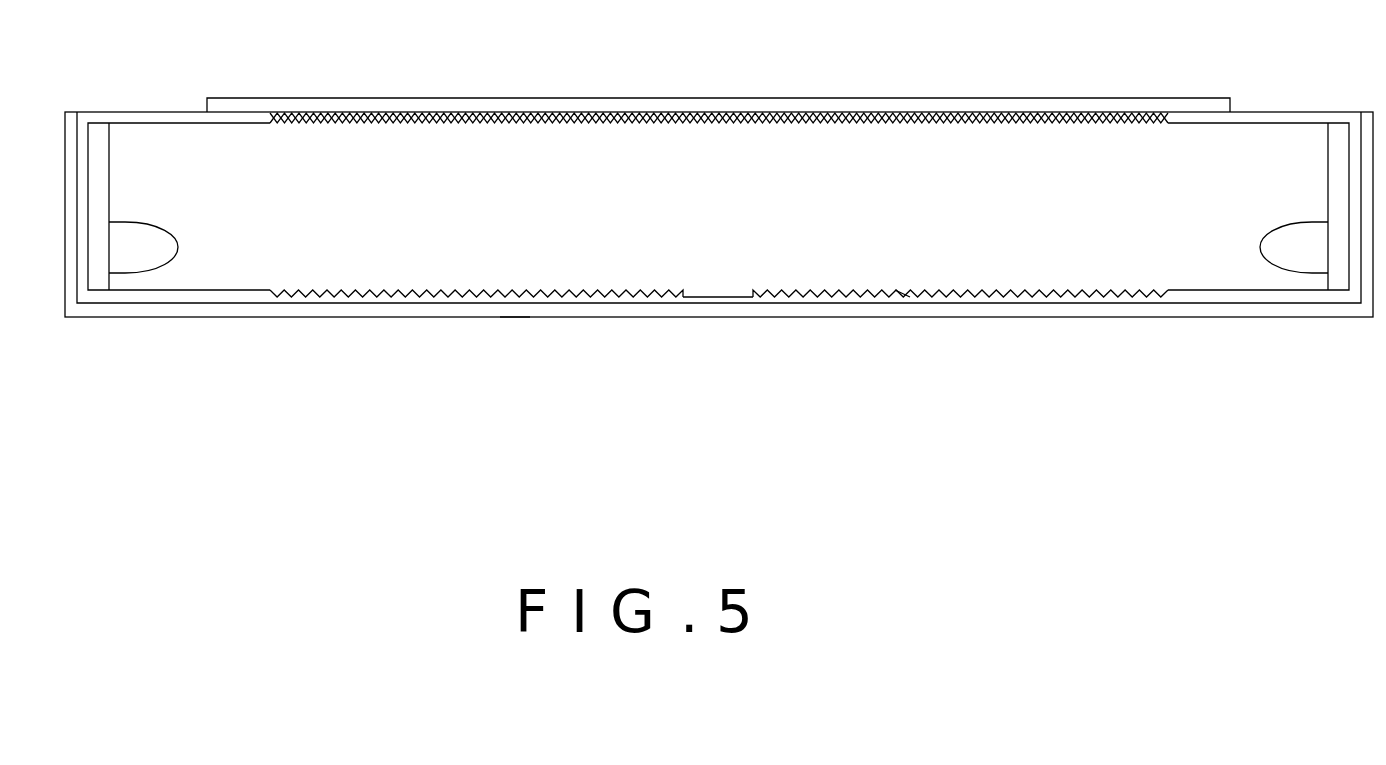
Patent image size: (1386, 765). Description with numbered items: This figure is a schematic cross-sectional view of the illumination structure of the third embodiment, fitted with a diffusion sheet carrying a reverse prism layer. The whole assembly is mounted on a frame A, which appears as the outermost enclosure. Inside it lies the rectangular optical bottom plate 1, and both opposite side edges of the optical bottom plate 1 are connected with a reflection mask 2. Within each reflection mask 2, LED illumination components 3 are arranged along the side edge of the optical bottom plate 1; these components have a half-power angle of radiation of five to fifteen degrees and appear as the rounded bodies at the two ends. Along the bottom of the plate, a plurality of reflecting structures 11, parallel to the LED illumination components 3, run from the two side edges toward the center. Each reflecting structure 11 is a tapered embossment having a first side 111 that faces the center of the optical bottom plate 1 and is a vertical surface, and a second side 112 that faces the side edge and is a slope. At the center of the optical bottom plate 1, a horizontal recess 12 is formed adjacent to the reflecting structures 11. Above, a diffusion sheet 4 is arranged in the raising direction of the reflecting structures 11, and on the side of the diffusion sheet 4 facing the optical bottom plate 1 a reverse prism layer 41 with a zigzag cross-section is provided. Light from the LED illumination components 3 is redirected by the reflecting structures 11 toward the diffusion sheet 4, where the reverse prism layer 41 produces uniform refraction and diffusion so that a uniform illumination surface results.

The optical bottom plate 1 is at (968, 300).
The reflection mask 2 is at (1283, 115).
The LED illumination component 3 is at (1302, 262).
The diffusion sheet 4 is at (1043, 99).
The reverse prism layer 41 is at (948, 114).
The reflecting structure 11 is at (718, 286).
The first side 111 is at (893, 295).
The second side 112 is at (902, 293).
The horizontal recess 12 is at (710, 298).
The frame A is at (515, 314).